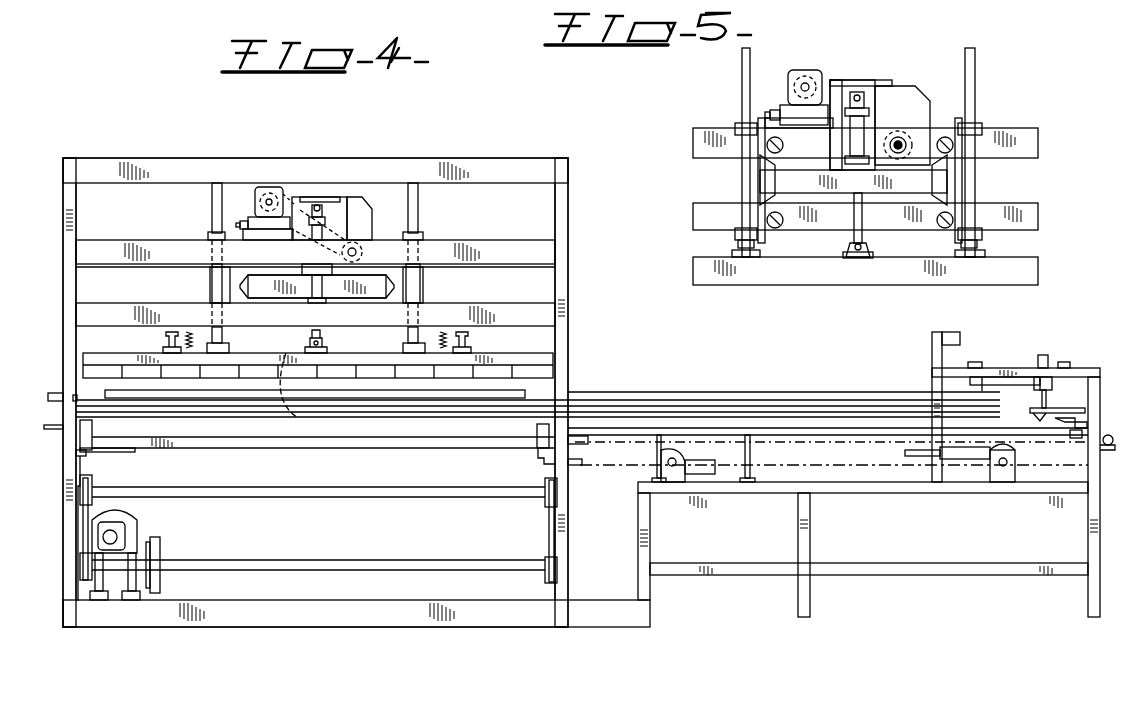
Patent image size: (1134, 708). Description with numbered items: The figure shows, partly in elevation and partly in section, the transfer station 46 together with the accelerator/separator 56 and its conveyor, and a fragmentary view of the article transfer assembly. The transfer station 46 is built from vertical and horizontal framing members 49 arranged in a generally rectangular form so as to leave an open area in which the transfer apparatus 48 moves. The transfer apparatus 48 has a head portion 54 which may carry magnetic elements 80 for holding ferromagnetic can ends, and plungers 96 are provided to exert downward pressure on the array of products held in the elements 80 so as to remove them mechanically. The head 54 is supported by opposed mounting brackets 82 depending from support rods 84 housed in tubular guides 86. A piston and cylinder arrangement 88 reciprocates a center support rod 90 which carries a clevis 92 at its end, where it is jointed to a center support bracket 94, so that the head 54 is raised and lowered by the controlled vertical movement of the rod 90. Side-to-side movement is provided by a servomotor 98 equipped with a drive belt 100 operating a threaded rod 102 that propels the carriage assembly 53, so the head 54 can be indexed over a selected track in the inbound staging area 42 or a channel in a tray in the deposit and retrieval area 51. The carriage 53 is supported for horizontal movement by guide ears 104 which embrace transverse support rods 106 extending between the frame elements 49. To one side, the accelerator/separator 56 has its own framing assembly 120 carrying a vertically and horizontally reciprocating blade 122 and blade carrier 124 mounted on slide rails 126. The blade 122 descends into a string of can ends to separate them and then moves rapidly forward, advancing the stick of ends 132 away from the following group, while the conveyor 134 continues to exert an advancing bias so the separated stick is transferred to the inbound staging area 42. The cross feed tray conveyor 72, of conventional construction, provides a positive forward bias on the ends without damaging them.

In FIG. 4, the inbound staging area 42 is at (120, 385).
In FIG. 4, the transfer station 46 is at (443, 155).
In FIG. 4, the transfer apparatus 48 is at (208, 210).
In FIG. 4, the framing members 49 is at (535, 250).
In FIG. 4, the deposit and retrieval area 51 is at (368, 436).
In FIG. 5, the carriage assembly 53 is at (805, 172).
In FIG. 4, the head portion 54 is at (383, 358).
In FIG. 4, the accelerator/separator 56 is at (1008, 362).
In FIG. 4, the cross feed tray conveyor 72 is at (851, 470).
In FIG. 4, the magnetic elements 80 is at (485, 398).
In FIG. 4, the mounting brackets 82 is at (218, 338).
In FIG. 4, the support rods 84 is at (420, 210).
In FIG. 4, the tubular guides 86 is at (210, 288).
In FIG. 4, the piston and cylinder arrangement 88 is at (315, 245).
In FIG. 5, the piston and cylinder arrangement 88 is at (858, 120).
In FIG. 4, the center support rod 90 is at (318, 298).
In FIG. 5, the center support rod 90 is at (855, 220).
In FIG. 4, the clevis 92 is at (312, 343).
In FIG. 4, the center support bracket 94 is at (293, 392).
In FIG. 4, the plungers 96 is at (165, 348).
In FIG. 5, the servomotor 98 is at (800, 68).
In FIG. 5, the drive belt 100 is at (885, 120).
In FIG. 5, the threaded rod 102 is at (905, 140).
In FIG. 5, the guide ears 104 is at (765, 115).
In FIG. 5, the transverse support rods 106 is at (958, 125).
In FIG. 4, the framing assembly 120 is at (925, 385).
In FIG. 4, the blade 122 is at (1045, 395).
In FIG. 4, the blade carrier 124 is at (1043, 355).
In FIG. 4, the slide rails 126 is at (980, 360).
In FIG. 4, the stick of ends 132 is at (763, 382).
In FIG. 4, the conveyor 134 is at (637, 445).